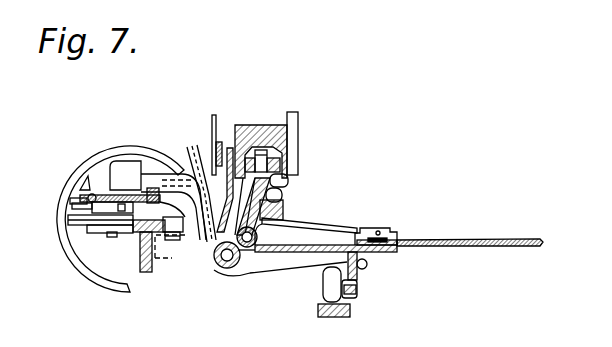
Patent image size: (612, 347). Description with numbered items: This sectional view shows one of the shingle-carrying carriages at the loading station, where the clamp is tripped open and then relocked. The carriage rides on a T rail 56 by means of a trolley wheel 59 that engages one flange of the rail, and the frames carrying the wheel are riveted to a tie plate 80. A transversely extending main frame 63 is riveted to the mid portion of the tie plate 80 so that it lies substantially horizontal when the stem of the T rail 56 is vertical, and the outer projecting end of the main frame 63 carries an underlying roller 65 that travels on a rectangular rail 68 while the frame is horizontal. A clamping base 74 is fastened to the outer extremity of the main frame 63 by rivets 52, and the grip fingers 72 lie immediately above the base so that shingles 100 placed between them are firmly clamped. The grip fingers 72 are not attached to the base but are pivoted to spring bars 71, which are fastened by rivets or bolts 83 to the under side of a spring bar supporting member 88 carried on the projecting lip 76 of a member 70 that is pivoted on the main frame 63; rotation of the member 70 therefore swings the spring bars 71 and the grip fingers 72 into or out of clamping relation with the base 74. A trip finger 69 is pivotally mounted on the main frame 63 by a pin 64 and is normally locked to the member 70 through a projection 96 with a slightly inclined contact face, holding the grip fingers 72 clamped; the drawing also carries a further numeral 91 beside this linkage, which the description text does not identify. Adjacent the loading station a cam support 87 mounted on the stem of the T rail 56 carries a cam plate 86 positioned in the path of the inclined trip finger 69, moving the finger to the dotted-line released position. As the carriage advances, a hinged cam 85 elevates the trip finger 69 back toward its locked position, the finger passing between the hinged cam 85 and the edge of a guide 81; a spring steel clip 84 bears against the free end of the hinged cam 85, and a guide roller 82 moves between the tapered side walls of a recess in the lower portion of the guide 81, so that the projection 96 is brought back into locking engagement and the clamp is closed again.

The rivets 52 is at (366, 267).
The T rail 56 is at (141, 262).
The trolley wheel 59 is at (78, 226).
The main frame 63 is at (268, 267).
The pin 64 is at (255, 234).
The roller 65 is at (323, 286).
The rectangular rail 68 is at (318, 309).
The trip finger 69 is at (198, 162).
The member 70 is at (290, 184).
The spring bar 71 is at (351, 231).
The grip finger 72 is at (386, 231).
The clamping base 74 is at (399, 250).
The projecting lip 76 is at (284, 196).
The tie plate 80 is at (66, 197).
The guide 81 is at (262, 132).
The guide roller 82 is at (283, 165).
The rivets or bolts 83 is at (306, 219).
The spring steel clip 84 is at (213, 126).
The hinged cam 85 is at (220, 142).
The cam plate 86 is at (196, 247).
The cam support 87 is at (148, 268).
The spring bar supporting member 88 is at (284, 210).
The link 91 is at (240, 222).
The projection 96 is at (224, 268).
The shingles 100 is at (470, 236).